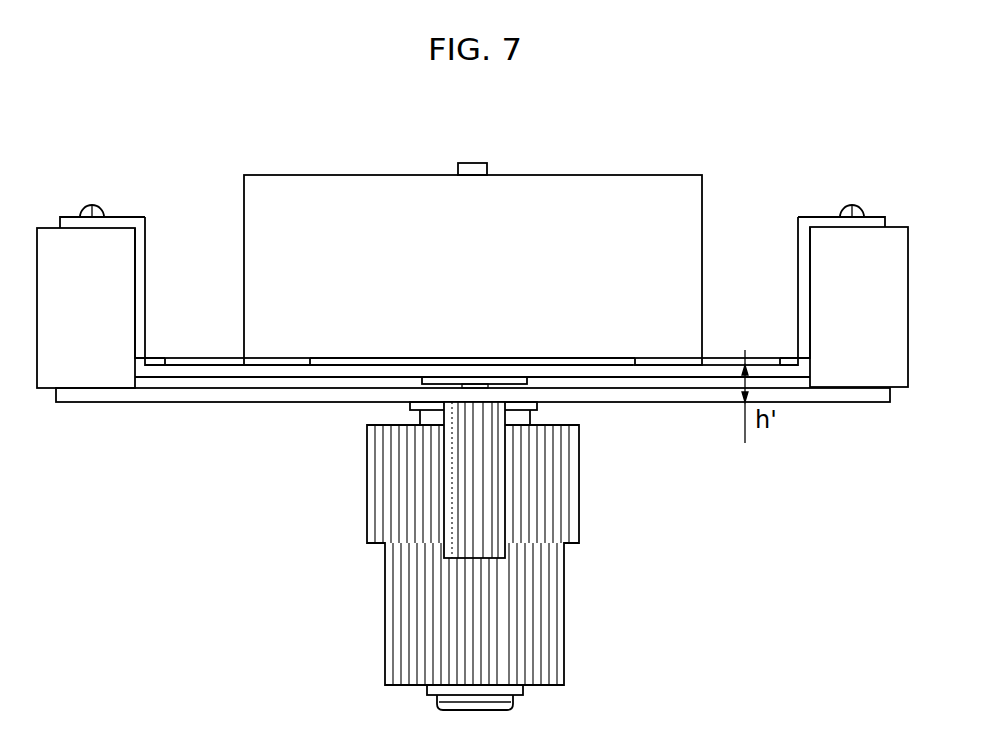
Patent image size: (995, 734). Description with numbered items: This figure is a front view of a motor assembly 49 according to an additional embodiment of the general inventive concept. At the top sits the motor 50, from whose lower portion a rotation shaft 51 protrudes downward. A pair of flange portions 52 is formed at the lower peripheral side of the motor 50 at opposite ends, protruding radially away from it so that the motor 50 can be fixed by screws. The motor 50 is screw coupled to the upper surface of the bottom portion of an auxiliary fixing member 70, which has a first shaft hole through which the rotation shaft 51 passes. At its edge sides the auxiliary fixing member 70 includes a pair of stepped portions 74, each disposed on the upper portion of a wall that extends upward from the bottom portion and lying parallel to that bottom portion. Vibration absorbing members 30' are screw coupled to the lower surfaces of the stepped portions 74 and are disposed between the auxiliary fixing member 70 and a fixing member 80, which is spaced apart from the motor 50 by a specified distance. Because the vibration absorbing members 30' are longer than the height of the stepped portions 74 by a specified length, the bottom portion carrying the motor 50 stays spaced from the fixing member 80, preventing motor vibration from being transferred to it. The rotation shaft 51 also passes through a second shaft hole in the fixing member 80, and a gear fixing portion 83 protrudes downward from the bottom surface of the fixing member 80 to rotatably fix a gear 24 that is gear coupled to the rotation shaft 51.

The stepped portions 74 is at (69, 225).
The auxiliary fixing member 70 is at (146, 244).
The motor 50 is at (598, 187).
The flange portions 52 is at (762, 357).
The vibration absorbing members 30' is at (472, 343).
The fixing member 80 is at (163, 402).
The gear fixing portion 83 is at (525, 408).
The rotation shaft 51 is at (497, 505).
The gear 24 is at (540, 630).
The motor assembly 49 is at (193, 580).